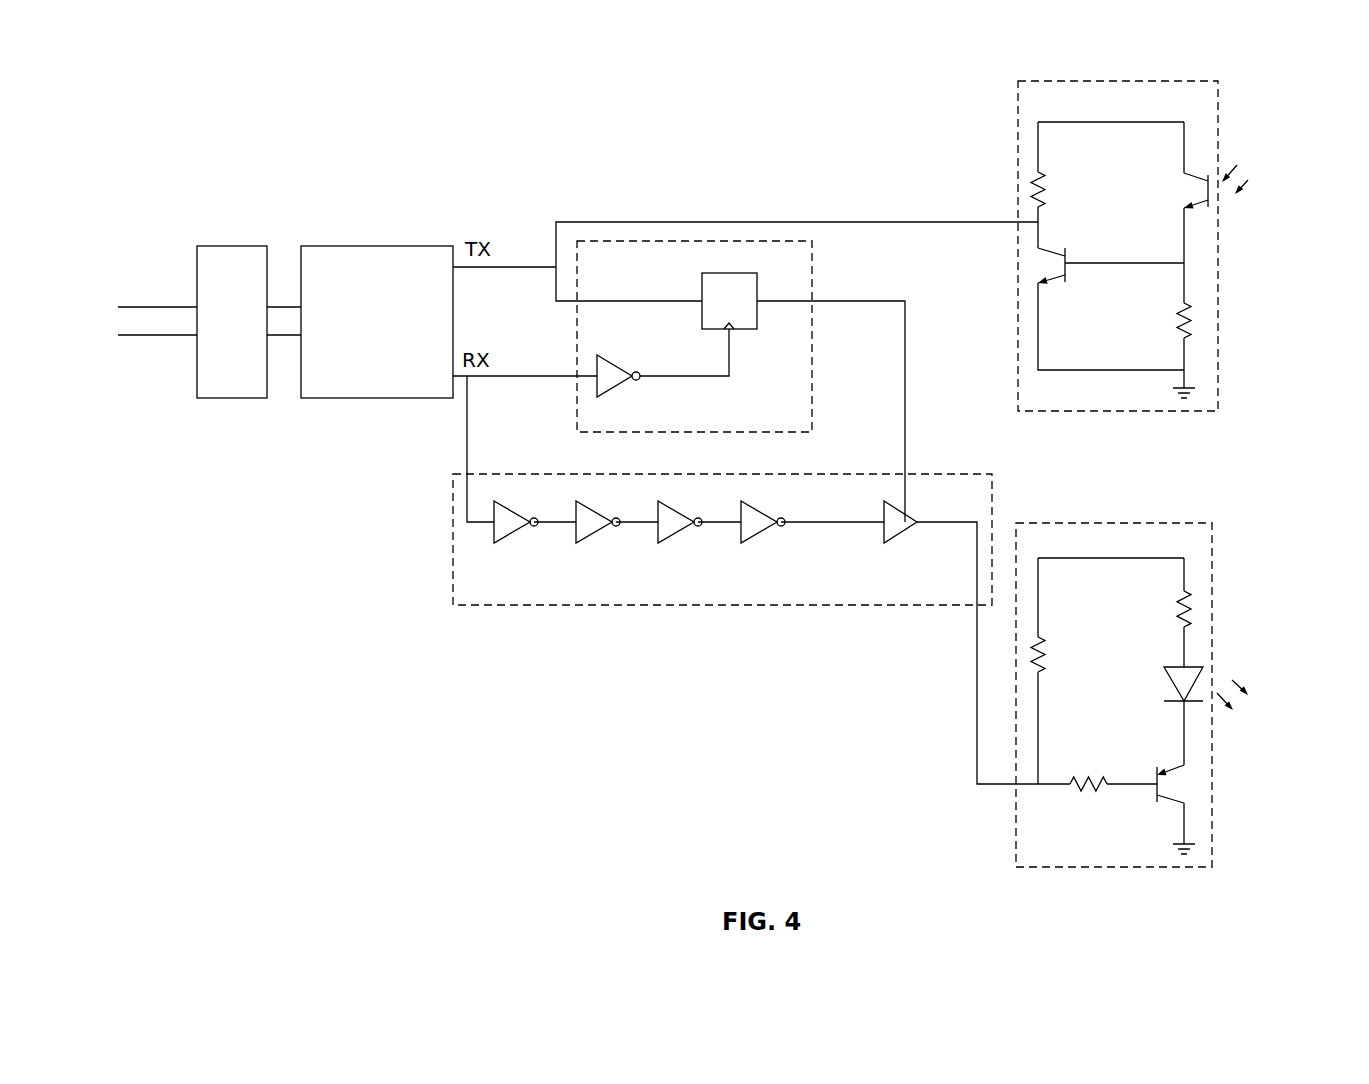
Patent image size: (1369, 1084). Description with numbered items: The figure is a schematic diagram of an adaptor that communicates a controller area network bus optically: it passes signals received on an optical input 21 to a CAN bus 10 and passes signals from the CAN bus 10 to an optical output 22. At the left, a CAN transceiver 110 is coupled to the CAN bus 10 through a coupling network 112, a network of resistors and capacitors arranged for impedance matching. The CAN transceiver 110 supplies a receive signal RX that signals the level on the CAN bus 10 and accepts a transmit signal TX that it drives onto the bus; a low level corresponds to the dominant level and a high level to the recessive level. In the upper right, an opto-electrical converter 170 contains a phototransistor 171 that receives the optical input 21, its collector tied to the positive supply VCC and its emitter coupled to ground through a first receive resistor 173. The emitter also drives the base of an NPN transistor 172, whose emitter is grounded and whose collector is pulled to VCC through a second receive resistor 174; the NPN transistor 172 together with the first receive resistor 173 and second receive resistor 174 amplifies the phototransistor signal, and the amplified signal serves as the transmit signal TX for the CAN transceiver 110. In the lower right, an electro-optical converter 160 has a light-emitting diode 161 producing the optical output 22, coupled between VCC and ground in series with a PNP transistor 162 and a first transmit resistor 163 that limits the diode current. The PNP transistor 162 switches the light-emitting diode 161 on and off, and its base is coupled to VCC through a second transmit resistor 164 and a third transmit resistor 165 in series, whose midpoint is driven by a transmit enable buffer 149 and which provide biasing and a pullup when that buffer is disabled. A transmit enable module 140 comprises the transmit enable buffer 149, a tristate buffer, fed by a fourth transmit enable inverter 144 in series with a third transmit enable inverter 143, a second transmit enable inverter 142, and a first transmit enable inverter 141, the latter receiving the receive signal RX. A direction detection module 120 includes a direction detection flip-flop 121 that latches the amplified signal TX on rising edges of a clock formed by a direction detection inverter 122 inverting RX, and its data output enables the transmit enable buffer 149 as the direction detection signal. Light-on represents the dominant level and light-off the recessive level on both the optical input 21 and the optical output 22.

The CAN bus 10 is at (130, 358).
The coupling network 112 is at (213, 398).
The CAN transceiver 110 is at (328, 398).
The direction detection module 120 is at (812, 400).
The direction detection flip-flop 121 is at (730, 273).
The direction detection inverter 122 is at (618, 385).
The transmit enable module 140 is at (725, 605).
The first transmit enable inverter 141 is at (516, 532).
The second transmit enable inverter 142 is at (598, 532).
The third transmit enable inverter 143 is at (680, 532).
The fourth transmit enable inverter 144 is at (763, 532).
The transmit enable buffer 149 is at (903, 532).
The opto-electrical converter 170 is at (1073, 411).
The phototransistor 171 is at (1182, 177).
The NPN transistor 172 is at (1036, 262).
The first receive resistor 173 is at (1193, 330).
The second receive resistor 174 is at (1043, 202).
The optical input 21 is at (1257, 208).
The electro-optical converter 160 is at (1087, 867).
The light-emitting diode 161 is at (1165, 702).
The PNP transistor 162 is at (1173, 773).
The first transmit resistor 163 is at (1197, 610).
The second transmit resistor 164 is at (1078, 792).
The third transmit resistor 165 is at (1047, 645).
The optical output 22 is at (1257, 670).